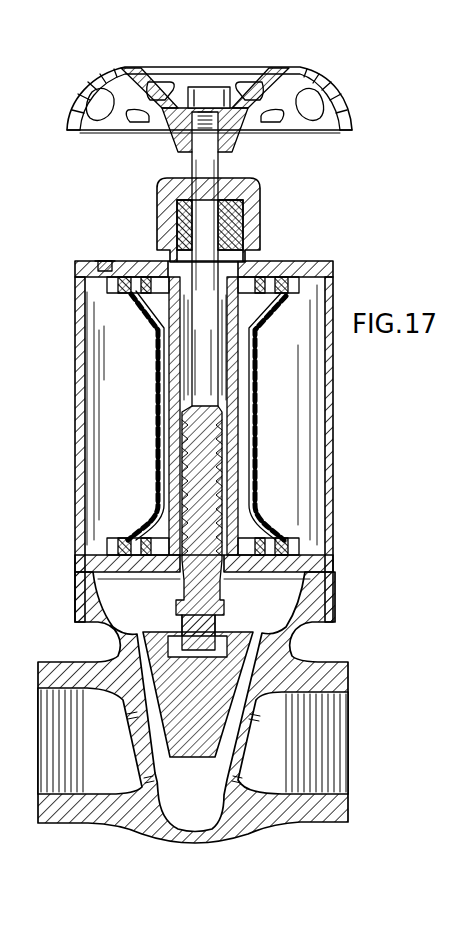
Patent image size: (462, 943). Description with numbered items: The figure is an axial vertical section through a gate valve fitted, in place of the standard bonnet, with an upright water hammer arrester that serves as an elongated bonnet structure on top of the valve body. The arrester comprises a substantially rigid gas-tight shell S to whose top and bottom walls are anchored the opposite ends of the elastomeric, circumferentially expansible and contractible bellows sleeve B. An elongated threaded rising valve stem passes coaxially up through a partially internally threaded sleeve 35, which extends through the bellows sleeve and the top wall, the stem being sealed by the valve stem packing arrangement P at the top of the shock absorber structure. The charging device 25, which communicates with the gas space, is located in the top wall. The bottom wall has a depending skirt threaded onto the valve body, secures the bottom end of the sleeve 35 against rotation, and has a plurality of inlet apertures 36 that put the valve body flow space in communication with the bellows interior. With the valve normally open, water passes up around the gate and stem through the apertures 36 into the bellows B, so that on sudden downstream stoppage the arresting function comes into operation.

The charging insert device 25 is at (106, 261).
The valve stem packing arrangement P is at (240, 233).
The partially internally threaded sleeve 35 is at (266, 261).
The bellows sleeve B is at (257, 391).
The gas-tight shell S is at (334, 406).
The inlet apertures 36 is at (252, 560).